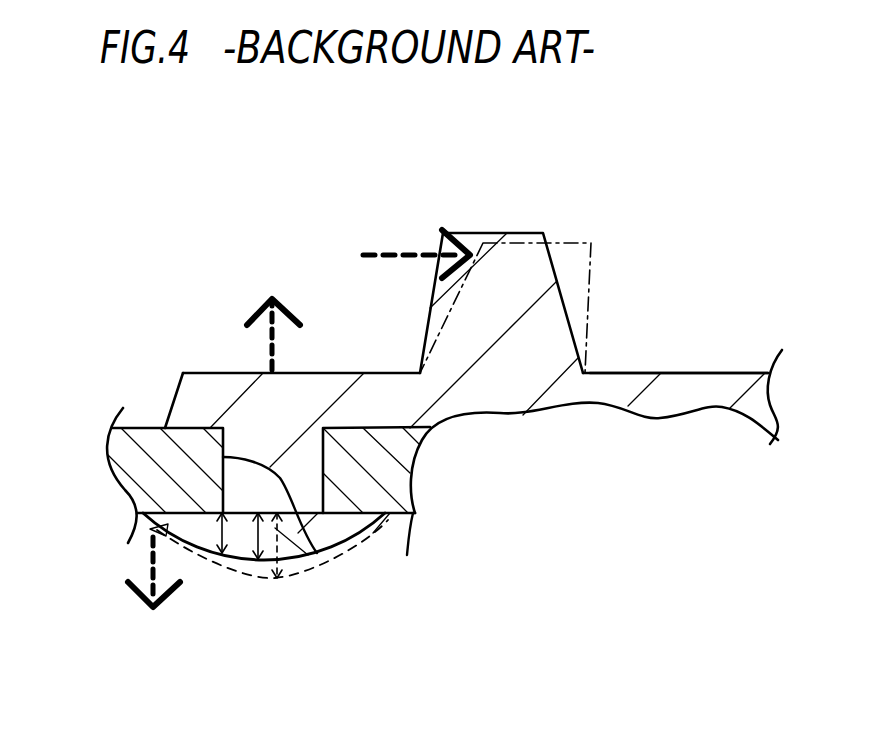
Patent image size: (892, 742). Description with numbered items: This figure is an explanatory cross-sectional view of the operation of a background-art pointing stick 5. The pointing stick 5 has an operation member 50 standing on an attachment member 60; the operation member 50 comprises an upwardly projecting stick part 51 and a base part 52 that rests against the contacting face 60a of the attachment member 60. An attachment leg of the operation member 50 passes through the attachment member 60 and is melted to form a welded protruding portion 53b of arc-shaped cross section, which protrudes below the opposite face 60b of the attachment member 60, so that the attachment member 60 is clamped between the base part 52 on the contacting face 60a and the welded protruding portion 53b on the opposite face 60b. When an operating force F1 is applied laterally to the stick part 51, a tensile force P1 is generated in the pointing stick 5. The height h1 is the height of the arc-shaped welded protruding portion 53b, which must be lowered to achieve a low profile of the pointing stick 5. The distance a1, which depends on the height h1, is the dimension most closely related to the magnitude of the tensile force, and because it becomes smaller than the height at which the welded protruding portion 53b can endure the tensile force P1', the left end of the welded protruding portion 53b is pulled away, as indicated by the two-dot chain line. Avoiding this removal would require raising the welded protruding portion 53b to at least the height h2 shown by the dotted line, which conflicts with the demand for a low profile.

The pointing stick 5 is at (361, 126).
The operation member 50 is at (340, 288).
The stick part 51 is at (542, 232).
The base part 52 is at (614, 361).
The welded protruding portion 53b is at (282, 560).
The attachment member 60 is at (157, 440).
The contacting face 60a is at (148, 430).
The opposite face 60b is at (402, 515).
The distance a1 is at (238, 527).
The height h1 is at (255, 553).
The height h2 is at (307, 552).
The tensile force P1 is at (251, 334).
The tensile force P1' is at (129, 575).
The operating force F1 is at (416, 249).